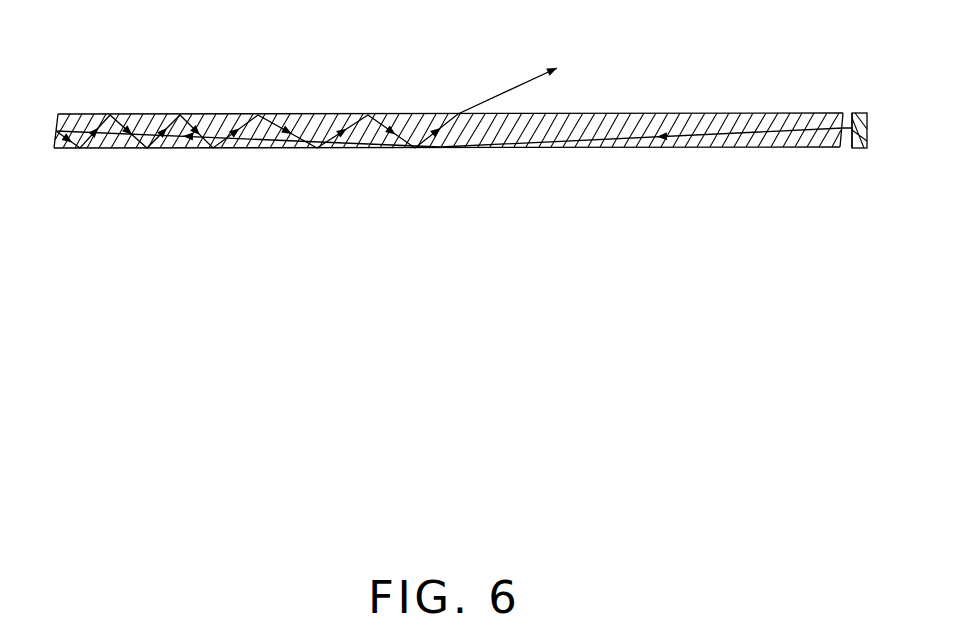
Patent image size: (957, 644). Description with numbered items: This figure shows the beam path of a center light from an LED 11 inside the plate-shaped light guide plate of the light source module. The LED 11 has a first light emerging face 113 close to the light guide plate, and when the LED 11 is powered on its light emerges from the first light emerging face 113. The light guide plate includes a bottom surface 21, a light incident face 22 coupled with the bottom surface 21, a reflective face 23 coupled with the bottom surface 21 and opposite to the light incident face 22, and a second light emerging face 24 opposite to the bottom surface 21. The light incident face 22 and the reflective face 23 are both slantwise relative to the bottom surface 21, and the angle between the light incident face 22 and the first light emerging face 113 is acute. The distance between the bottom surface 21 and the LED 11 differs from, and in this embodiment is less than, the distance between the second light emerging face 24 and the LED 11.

The LED 11 is at (861, 149).
The first light emerging face 113 is at (849, 130).
The bottom surface 21 is at (585, 148).
The light incident face 22 is at (843, 120).
The reflective face 23 is at (58, 114).
The second light emerging face 24 is at (253, 114).